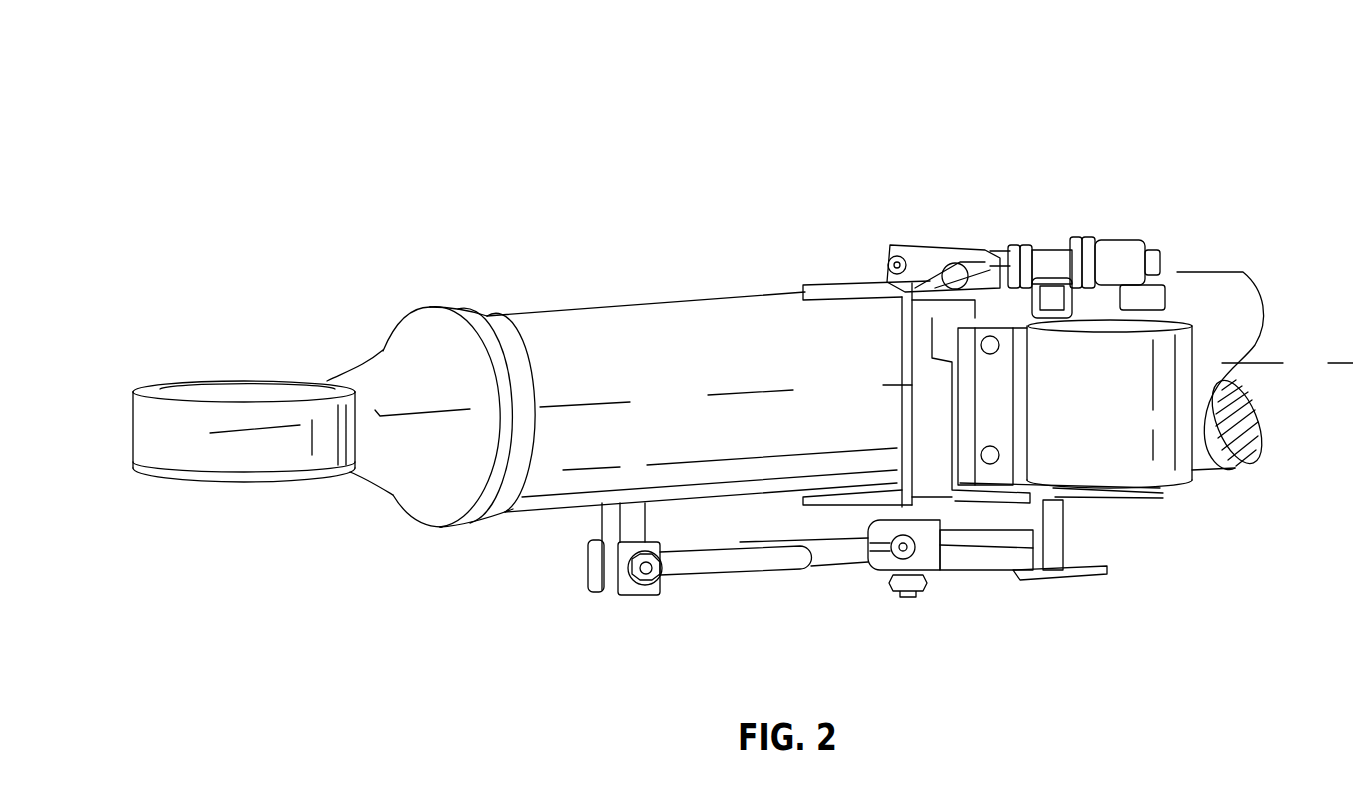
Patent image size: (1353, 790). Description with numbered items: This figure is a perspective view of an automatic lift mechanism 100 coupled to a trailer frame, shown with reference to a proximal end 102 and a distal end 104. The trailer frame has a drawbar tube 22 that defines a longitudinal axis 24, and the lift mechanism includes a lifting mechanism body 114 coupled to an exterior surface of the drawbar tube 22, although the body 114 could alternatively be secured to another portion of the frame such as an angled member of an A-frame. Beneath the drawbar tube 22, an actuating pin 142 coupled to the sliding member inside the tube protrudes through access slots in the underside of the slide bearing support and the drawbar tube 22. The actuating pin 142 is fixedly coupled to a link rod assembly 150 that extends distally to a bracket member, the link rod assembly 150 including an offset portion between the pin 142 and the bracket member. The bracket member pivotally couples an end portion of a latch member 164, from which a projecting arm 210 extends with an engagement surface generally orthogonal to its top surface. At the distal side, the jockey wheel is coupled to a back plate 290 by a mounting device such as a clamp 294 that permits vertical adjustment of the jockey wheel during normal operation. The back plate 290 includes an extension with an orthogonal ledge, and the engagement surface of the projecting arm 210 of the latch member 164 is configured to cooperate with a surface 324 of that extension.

The automatic lift mechanism 100 is at (245, 130).
The longitudinal axis 24 is at (157, 433).
The proximal end 102 is at (378, 320).
The drawbar tube 22 is at (656, 320).
The lifting mechanism body 114 is at (856, 290).
The back plate 290 is at (1155, 305).
The distal end 104 is at (1296, 272).
The actuating pin 142 is at (605, 520).
The link rod assembly 150 is at (760, 580).
The latch member 164 is at (985, 560).
The projecting arm 210 is at (1063, 555).
The surface 324 is at (1055, 488).
The clamp 294 is at (1165, 458).